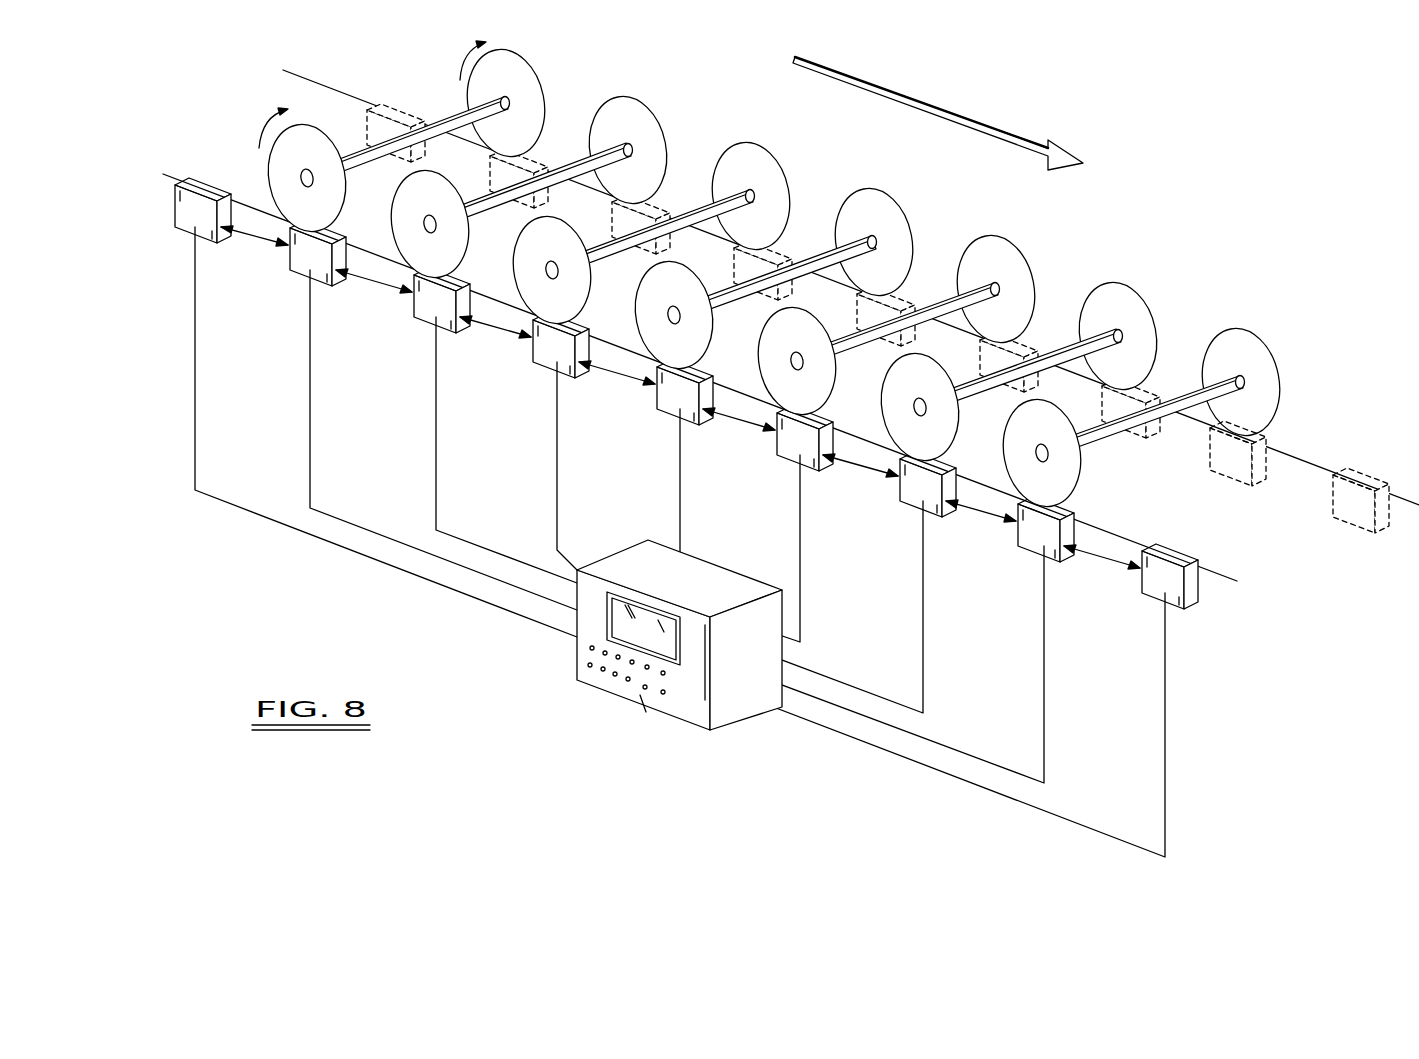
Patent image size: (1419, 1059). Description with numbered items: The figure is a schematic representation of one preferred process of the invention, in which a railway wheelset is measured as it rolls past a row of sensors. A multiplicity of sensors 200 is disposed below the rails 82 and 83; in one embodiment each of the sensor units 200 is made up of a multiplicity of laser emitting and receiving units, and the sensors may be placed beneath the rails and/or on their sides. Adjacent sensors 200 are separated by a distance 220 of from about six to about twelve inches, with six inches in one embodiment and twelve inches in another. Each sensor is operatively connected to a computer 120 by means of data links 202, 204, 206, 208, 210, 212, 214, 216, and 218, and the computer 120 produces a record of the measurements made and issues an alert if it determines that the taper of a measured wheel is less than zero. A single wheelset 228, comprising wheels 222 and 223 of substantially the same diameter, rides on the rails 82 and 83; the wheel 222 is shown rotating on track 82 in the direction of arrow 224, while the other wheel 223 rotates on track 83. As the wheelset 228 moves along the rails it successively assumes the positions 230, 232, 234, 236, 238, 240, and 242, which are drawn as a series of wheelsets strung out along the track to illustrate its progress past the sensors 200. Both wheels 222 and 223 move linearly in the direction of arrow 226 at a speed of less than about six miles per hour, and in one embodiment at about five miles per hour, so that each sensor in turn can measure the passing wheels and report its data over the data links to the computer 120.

The rail 82 is at (205, 182).
The rail 83 is at (353, 92).
The computer 120 is at (613, 690).
The sensors 200 is at (205, 223).
The data link 202 is at (195, 363).
The data link 204 is at (310, 398).
The data link 206 is at (436, 431).
The data link 208 is at (557, 475).
The data link 210 is at (680, 511).
The data link 212 is at (800, 560).
The data link 214 is at (923, 595).
The data link 216 is at (1044, 670).
The data link 218 is at (1165, 701).
The distance 220 is at (271, 242).
The wheel 222 is at (284, 185).
The wheel 223 is at (531, 96).
The arrow 224 is at (268, 127).
The arrow 226 is at (923, 98).
The wheelset 228 is at (377, 143).
The position 230 is at (528, 58).
The position 232 is at (653, 106).
The position 234 is at (778, 155).
The position 236 is at (897, 196).
The position 238 is at (1030, 258).
The position 240 is at (1150, 303).
The position 242 is at (1255, 328).